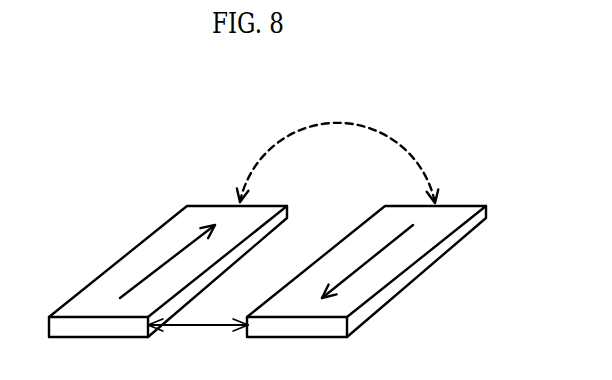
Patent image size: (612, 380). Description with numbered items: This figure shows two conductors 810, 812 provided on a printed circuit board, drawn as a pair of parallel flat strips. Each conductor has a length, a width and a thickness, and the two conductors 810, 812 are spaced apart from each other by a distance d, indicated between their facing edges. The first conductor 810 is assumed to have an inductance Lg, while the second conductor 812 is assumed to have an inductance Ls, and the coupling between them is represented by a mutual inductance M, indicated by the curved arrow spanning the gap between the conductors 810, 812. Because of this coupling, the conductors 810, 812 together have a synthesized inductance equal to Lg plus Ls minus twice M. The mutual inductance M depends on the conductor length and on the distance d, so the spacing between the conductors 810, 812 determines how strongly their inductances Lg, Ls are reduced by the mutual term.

The conductor 810 is at (221, 206).
The conductor 812 is at (448, 206).
The mutual inductance M is at (337, 143).
The inductance of conductor 810 Lg is at (83, 238).
The inductance of conductor 812 Ls is at (467, 283).
The distance d is at (198, 310).